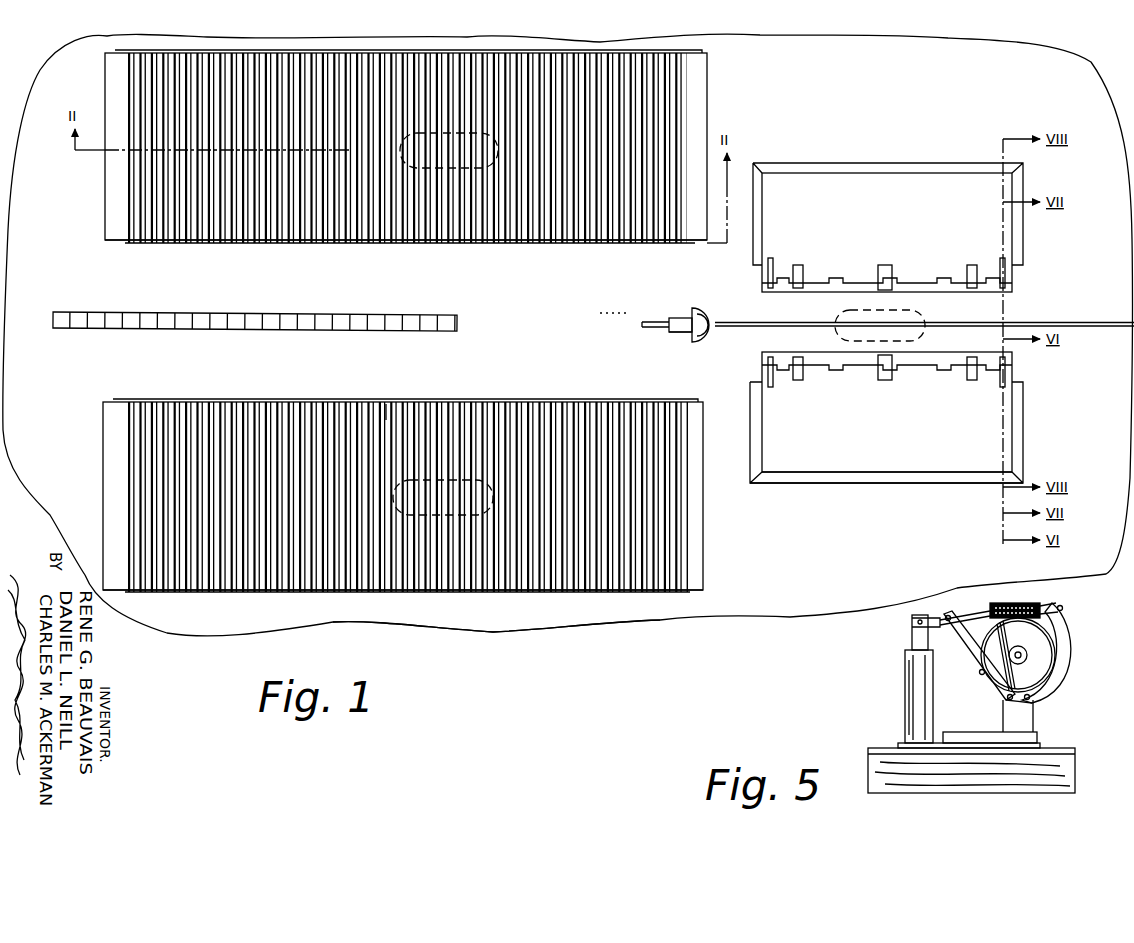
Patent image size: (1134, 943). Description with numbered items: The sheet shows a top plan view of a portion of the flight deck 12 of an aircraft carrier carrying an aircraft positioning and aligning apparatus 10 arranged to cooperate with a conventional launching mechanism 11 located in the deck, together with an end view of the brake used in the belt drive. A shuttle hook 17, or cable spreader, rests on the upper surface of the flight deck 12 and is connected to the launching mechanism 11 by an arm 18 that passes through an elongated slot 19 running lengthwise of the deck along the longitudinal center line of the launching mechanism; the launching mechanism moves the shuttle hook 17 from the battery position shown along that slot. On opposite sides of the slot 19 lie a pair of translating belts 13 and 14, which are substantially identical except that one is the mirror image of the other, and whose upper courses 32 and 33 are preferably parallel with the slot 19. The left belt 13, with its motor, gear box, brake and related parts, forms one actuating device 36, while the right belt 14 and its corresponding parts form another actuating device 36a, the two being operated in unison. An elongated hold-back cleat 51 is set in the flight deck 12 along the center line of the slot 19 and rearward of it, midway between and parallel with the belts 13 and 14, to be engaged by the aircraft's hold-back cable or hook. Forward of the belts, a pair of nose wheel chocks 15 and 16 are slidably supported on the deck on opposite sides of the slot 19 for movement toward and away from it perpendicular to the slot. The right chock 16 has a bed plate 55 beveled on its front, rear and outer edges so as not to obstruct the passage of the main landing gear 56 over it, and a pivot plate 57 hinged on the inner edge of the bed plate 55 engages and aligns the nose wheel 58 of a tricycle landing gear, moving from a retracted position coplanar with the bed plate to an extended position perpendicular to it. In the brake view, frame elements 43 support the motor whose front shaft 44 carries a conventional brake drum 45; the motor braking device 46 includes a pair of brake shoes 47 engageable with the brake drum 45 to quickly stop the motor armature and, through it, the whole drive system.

In FIG. 1, the aircraft positioning and aligning apparatus 10 is at (506, 638).
In FIG. 1, the launching mechanism 11 is at (679, 336).
In FIG. 1, the flight deck 12 is at (886, 513).
In FIG. 1, the translating belt 13 is at (588, 244).
In FIG. 1, the translating belt 14 is at (497, 403).
In FIG. 1, the nose wheel chock 15 is at (900, 161).
In FIG. 1, the nose wheel chock 16 is at (898, 490).
In FIG. 1, the shuttle hook 17 is at (706, 312).
In FIG. 1, the arm 18 is at (680, 320).
In FIG. 1, the elongated slot 19 is at (742, 331).
In FIG. 1, the upper course 32 is at (447, 239).
In FIG. 1, the upper course 33 is at (386, 418).
In FIG. 1, the actuating device 36 is at (95, 243).
In FIG. 1, the actuating device 36a is at (90, 412).
In FIG. 1, the hold-back cleat 51 is at (276, 309).
In FIG. 1, the bed plate 55 is at (887, 441).
In FIG. 1, the main landing gear 56 is at (445, 515).
In FIG. 1, the pivot plate 57 is at (935, 362).
In FIG. 1, the nose wheel 58 is at (922, 323).
In FIG. 5, the frame elements 43 is at (1065, 782).
In FIG. 5, the front shaft 44 is at (1023, 653).
In FIG. 5, the brake drum 45 is at (1042, 668).
In FIG. 5, the motor braking device 46 is at (880, 676).
In FIG. 5, the brake shoes 47 is at (980, 648).